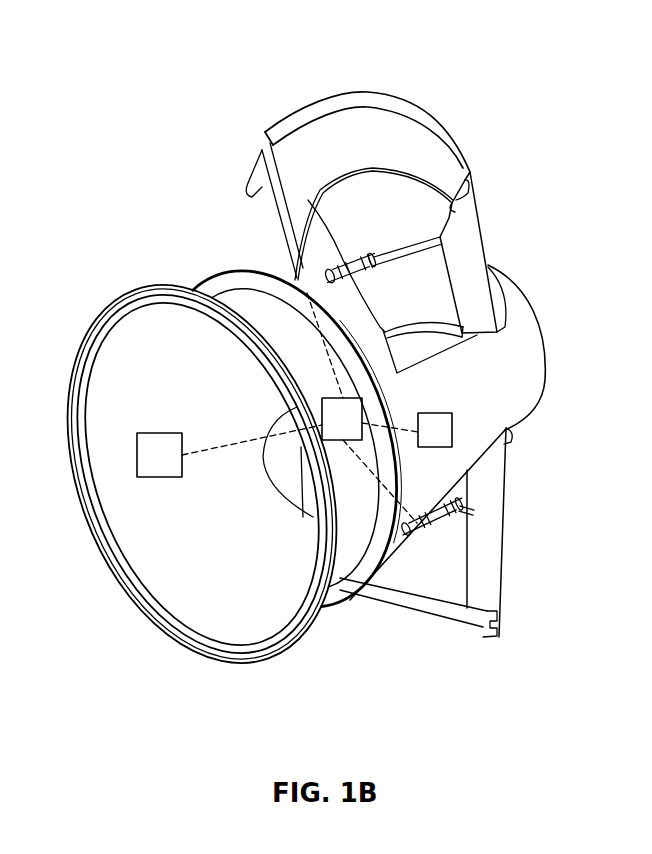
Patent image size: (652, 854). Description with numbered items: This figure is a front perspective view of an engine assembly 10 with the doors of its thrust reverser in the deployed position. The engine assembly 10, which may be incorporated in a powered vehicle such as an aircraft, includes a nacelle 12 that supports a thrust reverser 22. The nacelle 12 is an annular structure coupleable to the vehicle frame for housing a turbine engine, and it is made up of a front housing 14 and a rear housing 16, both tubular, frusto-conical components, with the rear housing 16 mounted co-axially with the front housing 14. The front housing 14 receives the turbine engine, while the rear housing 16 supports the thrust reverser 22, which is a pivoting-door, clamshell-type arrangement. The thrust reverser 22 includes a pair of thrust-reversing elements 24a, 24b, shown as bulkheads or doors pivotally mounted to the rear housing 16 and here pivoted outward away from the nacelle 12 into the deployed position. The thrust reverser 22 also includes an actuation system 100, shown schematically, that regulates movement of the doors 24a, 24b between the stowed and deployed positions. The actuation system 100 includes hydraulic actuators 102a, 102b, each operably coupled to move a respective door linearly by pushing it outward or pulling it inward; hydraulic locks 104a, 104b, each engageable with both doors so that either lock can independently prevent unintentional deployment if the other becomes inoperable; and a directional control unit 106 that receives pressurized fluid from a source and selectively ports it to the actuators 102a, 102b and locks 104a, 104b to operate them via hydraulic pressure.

The engine assembly 10 is at (104, 64).
The nacelle 12 is at (166, 639).
The front housing 14 is at (252, 303).
The rear housing 16 is at (523, 327).
The thrust reverser 22 is at (511, 207).
The thrust-reversing element 24a is at (424, 117).
The thrust-reversing element 24b is at (507, 588).
The actuation system 100 is at (350, 505).
The hydraulic actuator 102a is at (303, 275).
The hydraulic actuator 102b is at (461, 514).
The hydraulic lock 104a is at (137, 455).
The hydraulic lock 104b is at (452, 430).
The directional control unit 106 is at (357, 410).